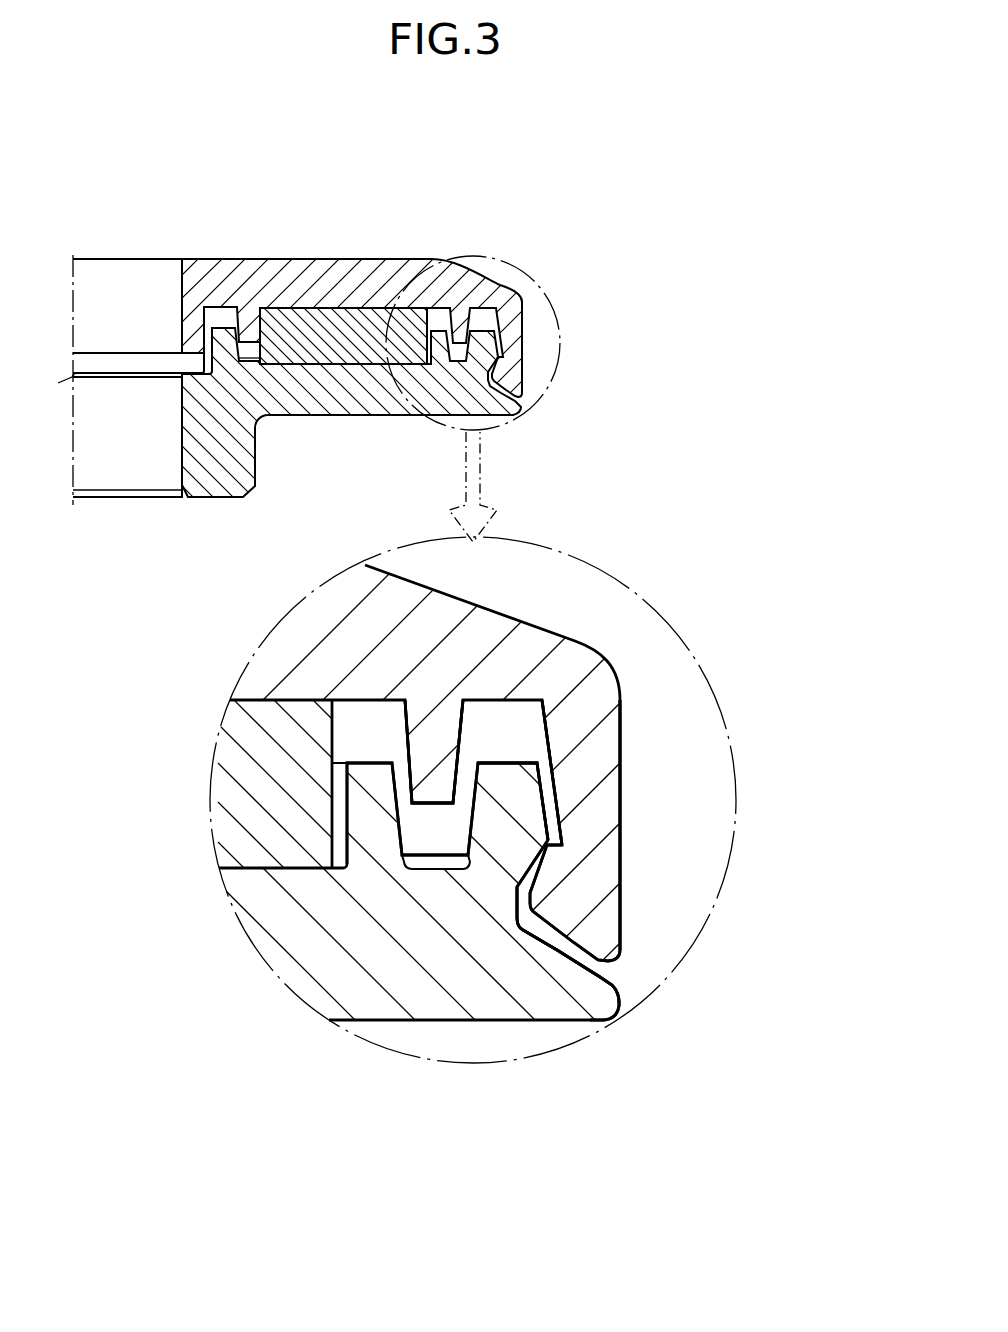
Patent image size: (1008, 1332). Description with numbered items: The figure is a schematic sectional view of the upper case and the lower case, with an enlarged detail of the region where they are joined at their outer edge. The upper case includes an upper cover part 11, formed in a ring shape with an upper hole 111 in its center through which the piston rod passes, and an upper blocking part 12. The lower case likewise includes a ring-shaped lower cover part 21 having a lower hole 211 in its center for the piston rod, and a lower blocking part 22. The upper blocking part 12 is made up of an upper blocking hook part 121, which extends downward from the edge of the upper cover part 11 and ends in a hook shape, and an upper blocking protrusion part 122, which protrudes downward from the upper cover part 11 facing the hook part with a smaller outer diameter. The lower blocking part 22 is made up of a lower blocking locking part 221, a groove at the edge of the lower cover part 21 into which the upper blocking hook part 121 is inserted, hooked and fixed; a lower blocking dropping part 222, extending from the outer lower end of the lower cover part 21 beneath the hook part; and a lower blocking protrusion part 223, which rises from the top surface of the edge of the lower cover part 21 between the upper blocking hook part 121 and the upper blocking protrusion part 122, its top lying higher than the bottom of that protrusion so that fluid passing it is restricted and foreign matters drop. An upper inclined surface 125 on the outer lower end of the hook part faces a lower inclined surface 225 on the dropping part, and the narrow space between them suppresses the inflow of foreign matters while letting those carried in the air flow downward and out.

The upper cover part 11 is at (318, 259).
The upper hole 111 is at (136, 300).
The upper blocking part 12 is at (808, 668).
The upper blocking hook part 121 is at (620, 745).
The upper blocking protrusion part 122 is at (447, 736).
The upper inclined surface 125 is at (555, 940).
The lower cover part 21 is at (330, 415).
The lower hole 211 is at (122, 445).
The lower blocking part 22 is at (398, 1155).
The lower blocking locking part 221 is at (521, 915).
The lower blocking dropping part 222 is at (603, 1002).
The lower blocking protrusion part 223 is at (498, 767).
The lower inclined surface 225 is at (600, 978).